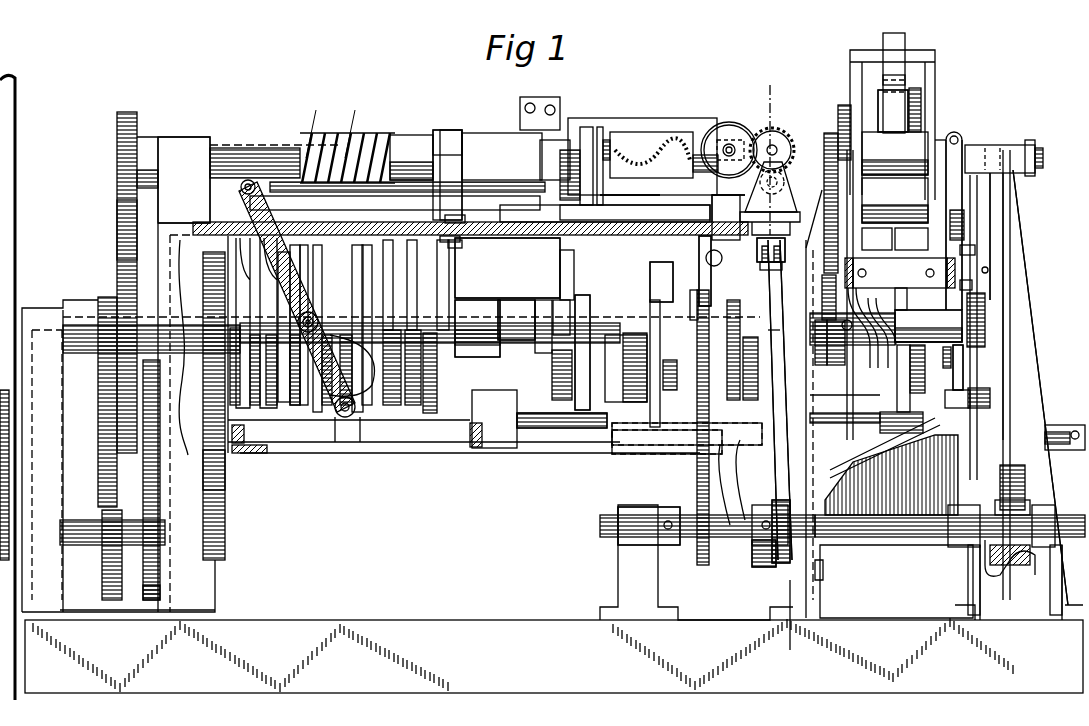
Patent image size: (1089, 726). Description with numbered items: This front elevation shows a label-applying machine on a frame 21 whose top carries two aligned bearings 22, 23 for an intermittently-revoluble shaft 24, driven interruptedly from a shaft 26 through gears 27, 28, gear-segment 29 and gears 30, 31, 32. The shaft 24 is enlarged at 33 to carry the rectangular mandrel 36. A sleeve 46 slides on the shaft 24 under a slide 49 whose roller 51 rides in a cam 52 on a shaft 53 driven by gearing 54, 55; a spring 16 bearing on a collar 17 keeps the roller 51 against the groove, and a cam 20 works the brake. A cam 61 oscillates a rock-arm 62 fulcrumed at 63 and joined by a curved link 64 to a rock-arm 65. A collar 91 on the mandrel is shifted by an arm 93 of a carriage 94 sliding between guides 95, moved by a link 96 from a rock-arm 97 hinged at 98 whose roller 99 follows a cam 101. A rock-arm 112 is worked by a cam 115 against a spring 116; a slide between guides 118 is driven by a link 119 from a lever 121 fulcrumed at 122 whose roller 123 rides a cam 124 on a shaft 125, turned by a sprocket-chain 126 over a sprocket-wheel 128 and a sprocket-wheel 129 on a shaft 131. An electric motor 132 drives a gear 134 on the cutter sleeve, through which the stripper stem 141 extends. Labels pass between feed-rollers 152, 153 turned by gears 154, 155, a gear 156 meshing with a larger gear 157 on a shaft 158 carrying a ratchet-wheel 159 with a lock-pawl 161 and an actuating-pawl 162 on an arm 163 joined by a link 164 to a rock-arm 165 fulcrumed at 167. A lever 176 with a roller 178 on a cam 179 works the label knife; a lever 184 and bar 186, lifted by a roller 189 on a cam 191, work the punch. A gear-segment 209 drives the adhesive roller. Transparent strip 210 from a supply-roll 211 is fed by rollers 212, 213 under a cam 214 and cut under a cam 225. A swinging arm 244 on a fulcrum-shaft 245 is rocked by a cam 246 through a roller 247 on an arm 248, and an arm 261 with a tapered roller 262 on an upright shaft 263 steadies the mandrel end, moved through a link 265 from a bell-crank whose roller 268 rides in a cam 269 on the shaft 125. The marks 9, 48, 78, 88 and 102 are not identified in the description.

The section line 9 is at (754, 82).
The coiled spring 16 is at (340, 140).
The collar 17 is at (370, 140).
The cam 20 is at (286, 332).
The frame or table portion 21 is at (545, 232).
The bearing 22 is at (192, 145).
The bearing 23 is at (490, 143).
The intermittently-revoluble shaft 24 is at (228, 152).
The shaft 26 is at (90, 545).
The gear 27 is at (145, 580).
The gear 28 is at (152, 600).
The gear-segment 29 is at (115, 595).
The gear 30 is at (107, 296).
The gear 31 is at (122, 232).
The gear 32 is at (125, 145).
The enlarged portion of shaft 33 is at (540, 152).
The mandrel 36 is at (660, 148).
The sleeve 46 is at (430, 150).
The plate 48 is at (452, 150).
The slide 49 is at (455, 236).
The pin or roller 51 is at (445, 242).
The cam 52 is at (390, 262).
The shaft 53 is at (515, 322).
The gearing 54 is at (226, 470).
The gearing 55 is at (210, 292).
The cam 61 is at (625, 292).
The rock-arm 62 is at (660, 401).
The fulcrum 63 is at (640, 448).
The curved link 64 is at (665, 375).
The companion rock-arm 65 is at (656, 287).
The roller housing 78 is at (688, 135).
The link arm 88 is at (215, 225).
The collar 91 is at (600, 150).
The arm 93 is at (588, 140).
The carriage 94 is at (596, 212).
The guides 95 is at (658, 205).
The link 96 is at (403, 183).
The rock-arm 97 is at (302, 300).
The hinge 98 is at (335, 418).
The roller 99 is at (318, 318).
The cam 101 is at (363, 355).
The gear 102 is at (812, 140).
The rock-arm 112 is at (719, 415).
The cam 115 is at (728, 470).
The adjustable coiled spring 116 is at (706, 258).
The guides 118 is at (730, 198).
The link 119 is at (712, 248).
The lever 121 is at (792, 460).
The fulcrum 122 is at (738, 450).
The roller 123 is at (765, 575).
The cam 124 is at (753, 560).
The shaft 125 is at (910, 525).
The sprocket-chain 126 is at (697, 485).
The sprocket-wheel 128 is at (703, 565).
The sprocket-wheel 129 is at (695, 300).
The shaft 131 is at (905, 310).
The electric motor 132 is at (735, 130).
The gear 134 is at (778, 130).
The shaft or stem 141 is at (752, 125).
The feed-roller 152 is at (895, 153).
The feed-roller 153 is at (895, 200).
The gear 154 is at (836, 130).
The gear 155 is at (785, 180).
The gear 156 is at (770, 255).
The larger gear 157 is at (775, 275).
The shaft 158 is at (895, 240).
The ratchet-wheel 159 is at (948, 236).
The lock-pawl 161 is at (960, 220).
The actuating-pawl 162 is at (972, 285).
The arm 163 is at (975, 250).
The link 164 is at (988, 270).
The rock-arm 165 is at (965, 362).
The fulcrum 167 is at (992, 392).
The lever 176 is at (850, 303).
The roller 178 is at (770, 370).
The cam 179 is at (845, 365).
The lever 184 is at (945, 135).
The vertically-reciprocatory bar 186 is at (968, 182).
The roller 189 is at (960, 300).
The cam 191 is at (965, 310).
The gear-segment 209 is at (967, 345).
The strip of transparent material 210 is at (905, 85).
The supply-roll 211 is at (892, 40).
The feed-roller 212 is at (908, 95).
The feed-roller 213 is at (922, 120).
The cam 214 is at (775, 340).
The cam 225 is at (885, 370).
The upright swinging arm 244 is at (900, 385).
The fulcrum-shaft 245 is at (575, 455).
The cam 246 is at (545, 302).
The roller 247 is at (572, 258).
The arm 248 is at (552, 374).
The arm 261 is at (1034, 155).
The tapered end or roller 262 is at (1000, 150).
The upright shaft 263 is at (1020, 240).
The link 265 is at (1045, 430).
The roller 268 is at (1000, 484).
The cam 269 is at (988, 555).